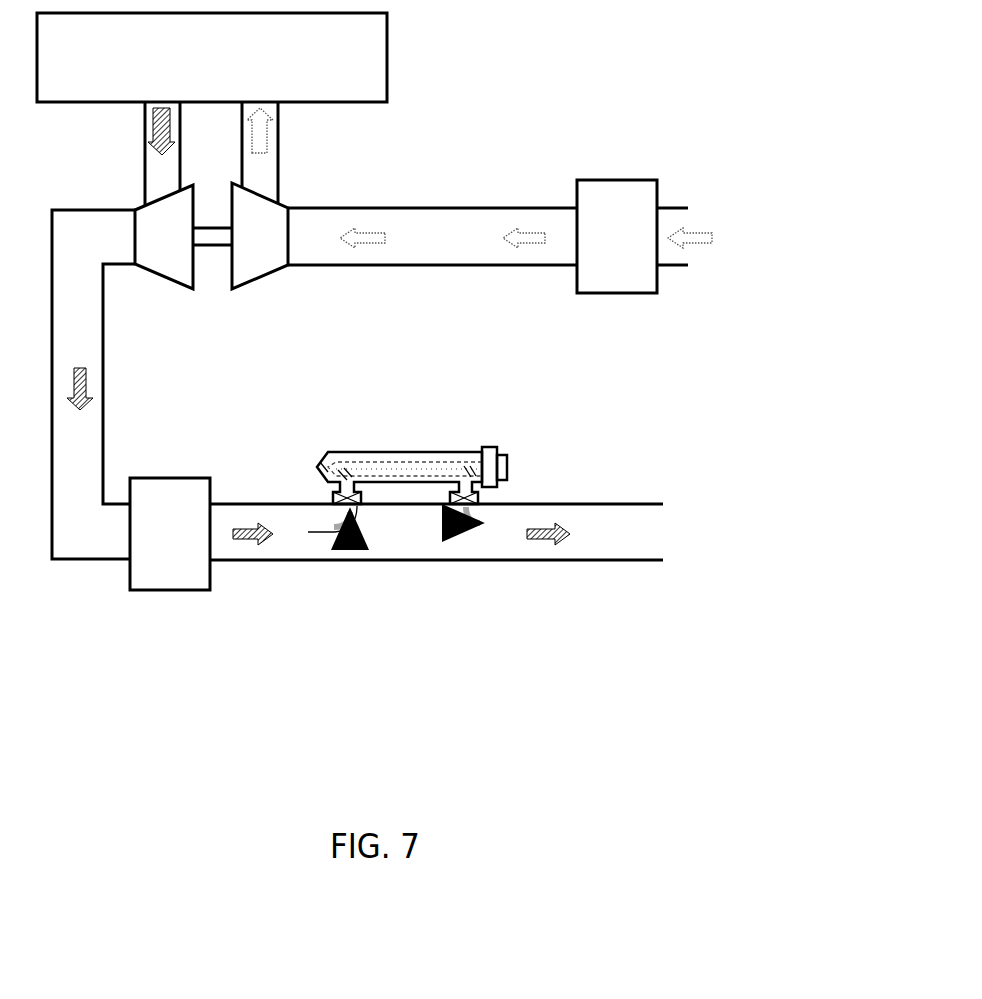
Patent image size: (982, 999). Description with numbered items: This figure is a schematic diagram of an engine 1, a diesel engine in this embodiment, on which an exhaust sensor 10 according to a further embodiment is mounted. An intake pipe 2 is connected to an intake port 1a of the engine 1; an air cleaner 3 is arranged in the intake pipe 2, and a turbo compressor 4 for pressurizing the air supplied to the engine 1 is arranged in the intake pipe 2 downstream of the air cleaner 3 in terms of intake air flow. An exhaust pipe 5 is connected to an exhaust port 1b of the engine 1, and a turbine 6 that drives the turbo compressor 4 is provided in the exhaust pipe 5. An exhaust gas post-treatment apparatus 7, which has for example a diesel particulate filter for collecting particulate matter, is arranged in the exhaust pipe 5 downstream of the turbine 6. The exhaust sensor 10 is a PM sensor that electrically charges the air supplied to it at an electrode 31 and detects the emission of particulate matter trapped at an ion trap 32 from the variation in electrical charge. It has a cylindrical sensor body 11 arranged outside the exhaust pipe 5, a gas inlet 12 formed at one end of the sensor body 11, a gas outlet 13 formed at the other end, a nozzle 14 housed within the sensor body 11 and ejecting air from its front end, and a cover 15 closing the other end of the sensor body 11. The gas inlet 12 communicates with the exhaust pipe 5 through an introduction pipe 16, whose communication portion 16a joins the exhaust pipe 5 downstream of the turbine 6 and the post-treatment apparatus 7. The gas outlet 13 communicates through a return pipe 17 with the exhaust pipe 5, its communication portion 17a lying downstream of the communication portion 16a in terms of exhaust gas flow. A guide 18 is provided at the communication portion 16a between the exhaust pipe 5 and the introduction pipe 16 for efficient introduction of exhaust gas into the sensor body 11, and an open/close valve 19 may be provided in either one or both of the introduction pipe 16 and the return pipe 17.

The engine 1 is at (204, 52).
The intake port 1a is at (280, 104).
The exhaust port 1b is at (147, 104).
The intake pipe 2 is at (418, 208).
The air cleaner 3 is at (612, 185).
The turbo compressor 4 is at (265, 267).
The exhaust pipe 5 is at (60, 208).
The turbine 6 is at (160, 268).
The exhaust gas post-treatment apparatus 7 is at (138, 562).
The exhaust sensor 10 is at (403, 489).
The sensor body 11 is at (357, 451).
The gas inlet 12 is at (343, 478).
The gas outlet 13 is at (467, 473).
The nozzle 14 is at (410, 460).
The cover 15 is at (500, 450).
The introduction pipe 16 is at (363, 503).
The communication portion 16a is at (333, 496).
The return pipe 17 is at (452, 504).
The communication portion 17a is at (478, 497).
The guide 18 is at (323, 538).
The open/close valve 19 is at (367, 508).
The electrode 31 is at (316, 467).
The ion trap 32 is at (437, 462).